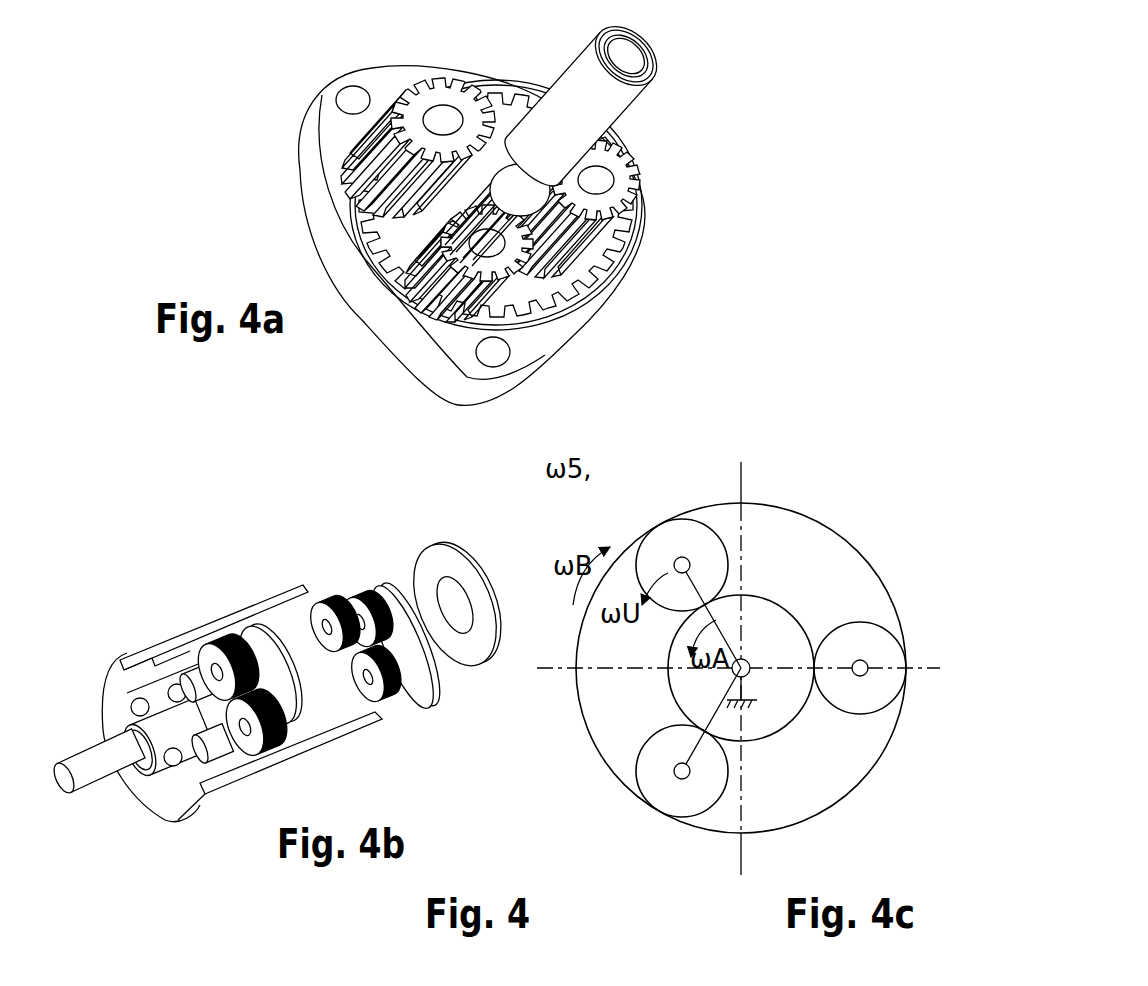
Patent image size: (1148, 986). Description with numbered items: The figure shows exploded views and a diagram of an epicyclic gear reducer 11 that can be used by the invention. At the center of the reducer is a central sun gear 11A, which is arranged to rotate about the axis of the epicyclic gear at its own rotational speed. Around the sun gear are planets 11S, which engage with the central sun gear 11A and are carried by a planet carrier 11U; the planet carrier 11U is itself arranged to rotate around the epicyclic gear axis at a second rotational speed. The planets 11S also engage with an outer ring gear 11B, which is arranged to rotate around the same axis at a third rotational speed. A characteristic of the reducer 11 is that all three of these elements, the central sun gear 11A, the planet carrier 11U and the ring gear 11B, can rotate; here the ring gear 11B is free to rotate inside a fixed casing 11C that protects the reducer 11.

In FIG. 4A, the epicyclic gear reducer 11 is at (314, 56).
In FIG. 4A, the central sun gear 11A is at (554, 270).
In FIG. 4B, the central sun gear 11A is at (197, 723).
In FIG. 4C, the central sun gear 11A is at (665, 694).
In FIG. 4A, the outer ring gear 11B is at (507, 86).
In FIG. 4B, the outer ring gear 11B is at (316, 722).
In FIG. 4C, the outer ring gear 11B is at (792, 524).
In FIG. 4A, the fixed casing 11C is at (433, 333).
In FIG. 4B, the fixed casing 11C is at (197, 790).
In FIG. 4C, the fixed casing 11C is at (757, 720).
In FIG. 4A, the planets 11S is at (427, 283).
In FIG. 4B, the planets 11S is at (227, 688).
In FIG. 4C, the planets 11S is at (630, 762).
In FIG. 4B, the planet carrier 11U is at (265, 680).
In FIG. 4C, the planet carrier 11U is at (750, 665).